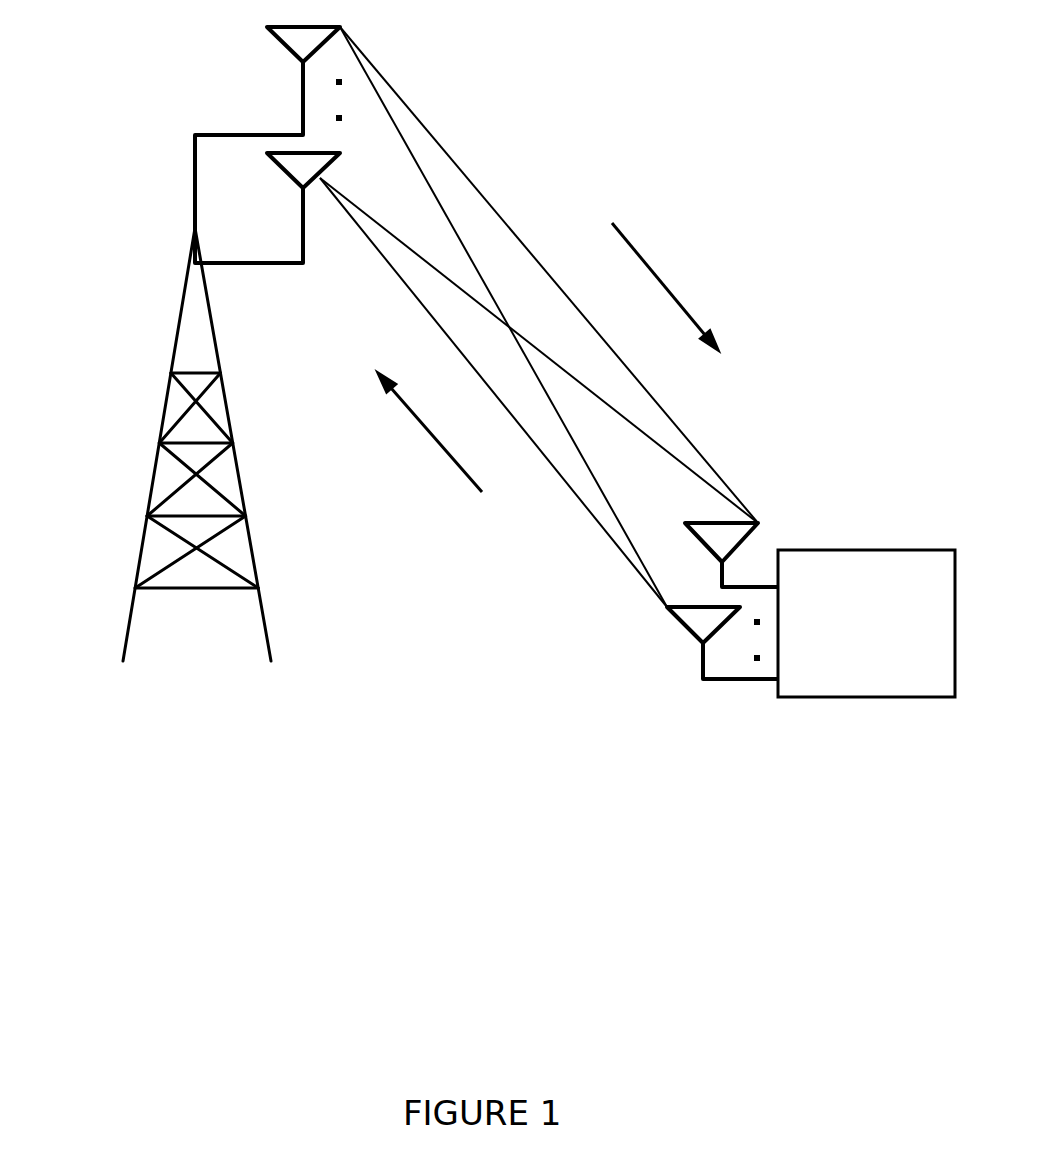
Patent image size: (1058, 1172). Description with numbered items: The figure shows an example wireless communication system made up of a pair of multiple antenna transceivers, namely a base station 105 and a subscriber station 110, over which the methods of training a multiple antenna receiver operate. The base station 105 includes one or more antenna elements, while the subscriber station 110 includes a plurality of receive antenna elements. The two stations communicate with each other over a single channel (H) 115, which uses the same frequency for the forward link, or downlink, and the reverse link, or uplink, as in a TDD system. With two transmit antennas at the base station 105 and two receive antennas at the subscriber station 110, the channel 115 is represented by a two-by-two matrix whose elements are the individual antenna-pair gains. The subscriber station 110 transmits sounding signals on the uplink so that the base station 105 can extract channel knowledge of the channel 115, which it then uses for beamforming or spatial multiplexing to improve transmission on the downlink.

The base station 105 is at (195, 325).
The subscriber station 110 is at (886, 678).
The channel (H) 115 is at (520, 317).